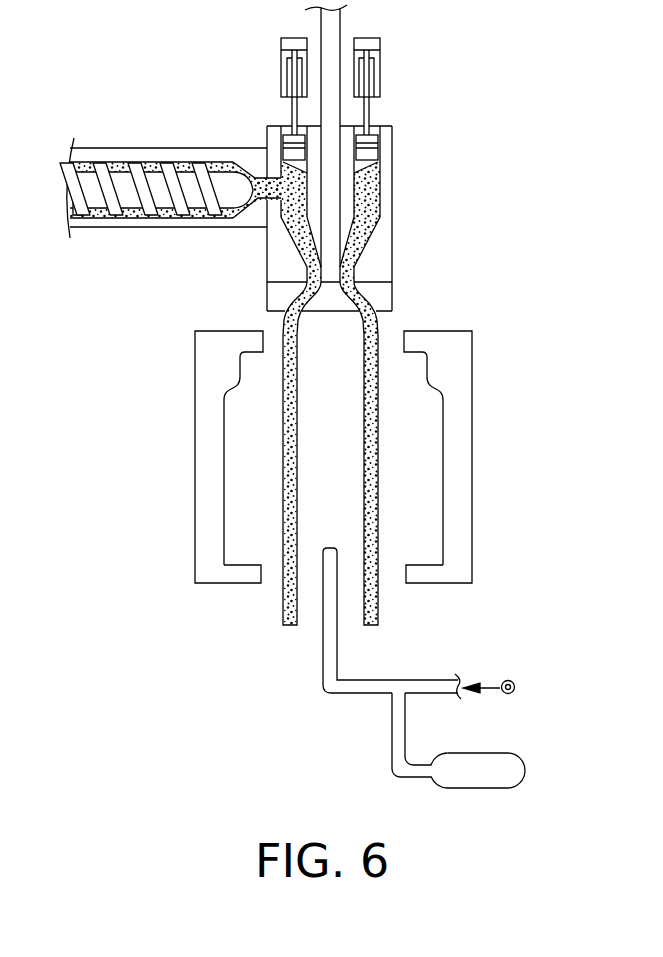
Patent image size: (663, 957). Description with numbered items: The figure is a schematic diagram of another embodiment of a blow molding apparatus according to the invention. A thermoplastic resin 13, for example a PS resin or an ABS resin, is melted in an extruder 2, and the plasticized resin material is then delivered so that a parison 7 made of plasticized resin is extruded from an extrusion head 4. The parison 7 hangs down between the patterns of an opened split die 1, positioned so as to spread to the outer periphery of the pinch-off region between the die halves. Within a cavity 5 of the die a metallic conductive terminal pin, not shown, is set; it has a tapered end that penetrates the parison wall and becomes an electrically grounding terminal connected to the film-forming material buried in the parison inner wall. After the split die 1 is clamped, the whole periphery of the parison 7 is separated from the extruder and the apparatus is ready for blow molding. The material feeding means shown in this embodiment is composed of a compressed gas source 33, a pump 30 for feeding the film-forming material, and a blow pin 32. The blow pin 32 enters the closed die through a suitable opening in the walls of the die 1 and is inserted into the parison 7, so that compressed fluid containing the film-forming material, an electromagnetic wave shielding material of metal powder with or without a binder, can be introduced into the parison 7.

The split die 1 is at (195, 453).
The extruder 2 is at (133, 148).
The extrusion head 4 is at (406, 192).
The cavity 5 is at (243, 492).
The parison 7 is at (396, 513).
The thermoplastic resin 13 is at (256, 160).
The pump 30 is at (490, 788).
The blow pin 32 is at (322, 625).
The compressed gas source 33 is at (507, 680).